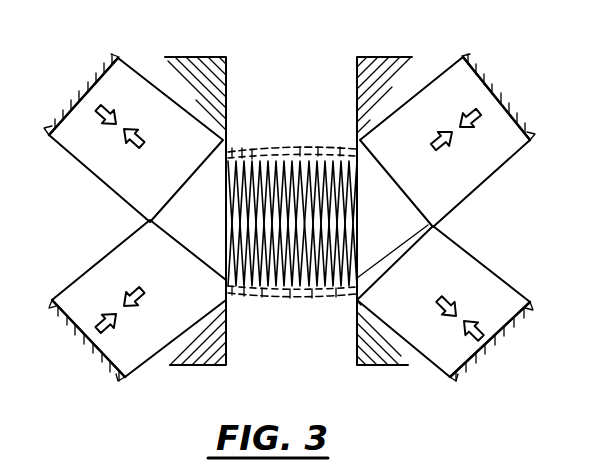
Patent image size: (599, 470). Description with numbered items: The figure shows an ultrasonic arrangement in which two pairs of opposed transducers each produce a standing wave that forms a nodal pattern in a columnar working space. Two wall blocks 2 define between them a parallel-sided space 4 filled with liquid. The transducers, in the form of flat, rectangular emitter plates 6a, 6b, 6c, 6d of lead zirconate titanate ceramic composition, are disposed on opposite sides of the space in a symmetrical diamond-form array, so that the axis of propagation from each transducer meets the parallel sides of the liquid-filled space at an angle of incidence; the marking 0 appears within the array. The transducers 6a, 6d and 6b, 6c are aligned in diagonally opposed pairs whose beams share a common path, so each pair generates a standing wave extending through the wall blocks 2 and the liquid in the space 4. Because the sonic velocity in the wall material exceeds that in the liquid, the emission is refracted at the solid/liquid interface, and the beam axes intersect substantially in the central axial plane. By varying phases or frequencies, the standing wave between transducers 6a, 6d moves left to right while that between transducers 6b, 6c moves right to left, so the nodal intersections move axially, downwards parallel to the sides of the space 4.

The wall block 2 is at (226, 350).
The parallel-sided space 4 is at (292, 191).
The emitter plate 6a is at (108, 62).
The emitter plate 6b is at (500, 96).
The emitter plate 6c is at (110, 390).
The emitter plate 6d is at (470, 384).
The reference point 0 is at (181, 142).